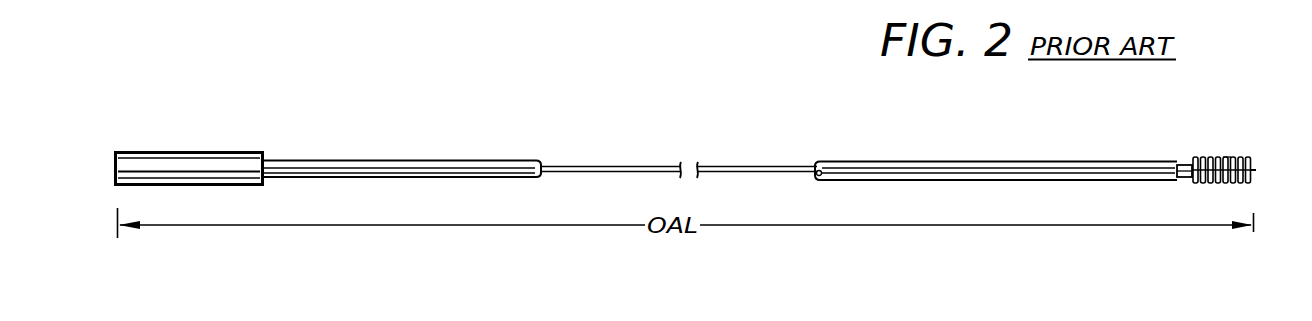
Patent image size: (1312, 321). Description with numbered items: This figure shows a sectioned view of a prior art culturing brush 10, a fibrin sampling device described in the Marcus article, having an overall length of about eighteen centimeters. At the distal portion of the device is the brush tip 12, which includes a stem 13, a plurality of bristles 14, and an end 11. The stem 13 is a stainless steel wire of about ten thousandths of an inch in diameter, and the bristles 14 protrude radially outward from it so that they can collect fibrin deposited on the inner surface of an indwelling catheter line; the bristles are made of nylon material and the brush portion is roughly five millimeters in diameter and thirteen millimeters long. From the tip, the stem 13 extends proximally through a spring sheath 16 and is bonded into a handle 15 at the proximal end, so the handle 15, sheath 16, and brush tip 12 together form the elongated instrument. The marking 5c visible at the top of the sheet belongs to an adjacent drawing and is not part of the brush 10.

The culturing brush 10 is at (610, 110).
The end 11 is at (1253, 170).
The brush tip 12 is at (1204, 146).
The stem 13 is at (1227, 160).
The plurality of bristles 14 is at (1190, 182).
The handle 15 is at (162, 152).
The spring sheath 16 is at (422, 161).
The stray numeral from adjacent figure 5c is at (402, 0).